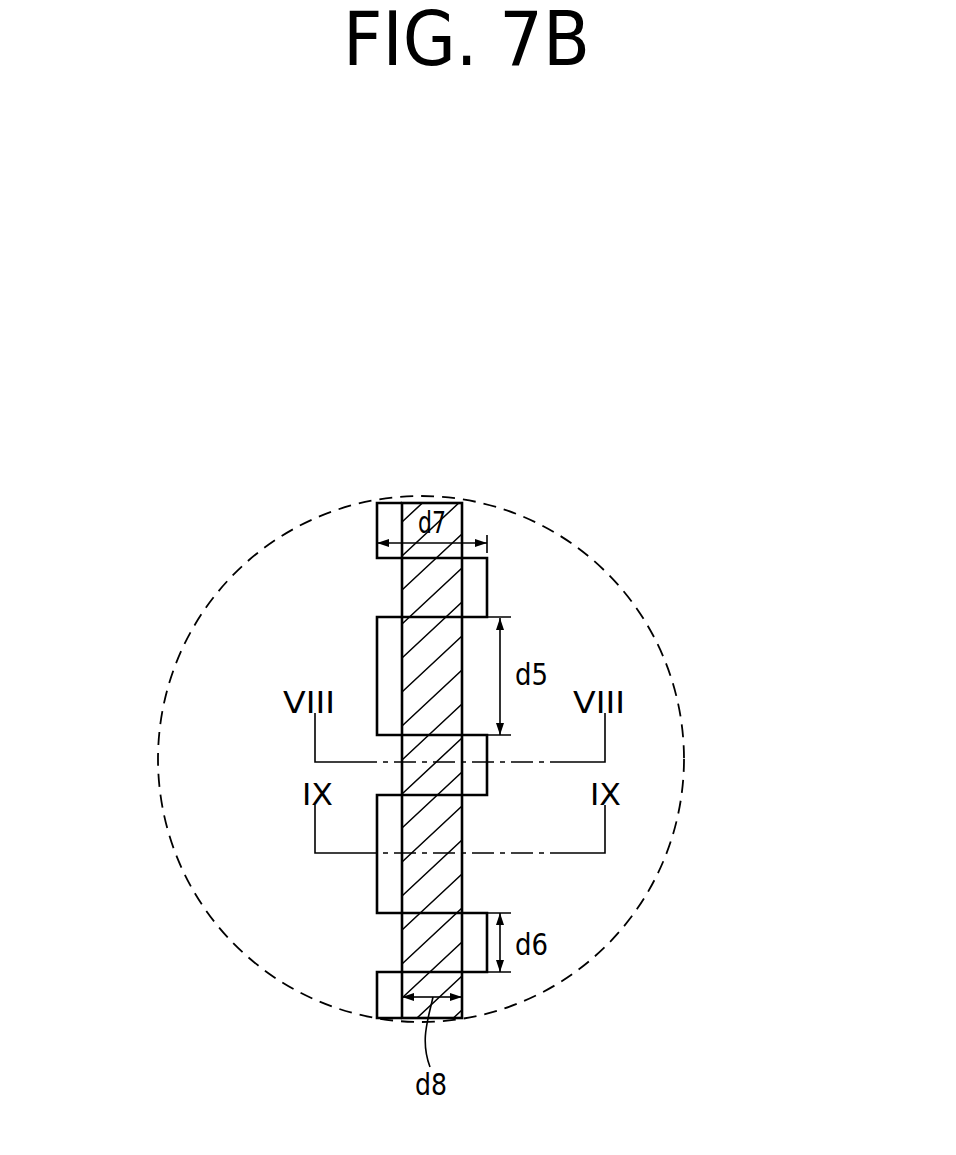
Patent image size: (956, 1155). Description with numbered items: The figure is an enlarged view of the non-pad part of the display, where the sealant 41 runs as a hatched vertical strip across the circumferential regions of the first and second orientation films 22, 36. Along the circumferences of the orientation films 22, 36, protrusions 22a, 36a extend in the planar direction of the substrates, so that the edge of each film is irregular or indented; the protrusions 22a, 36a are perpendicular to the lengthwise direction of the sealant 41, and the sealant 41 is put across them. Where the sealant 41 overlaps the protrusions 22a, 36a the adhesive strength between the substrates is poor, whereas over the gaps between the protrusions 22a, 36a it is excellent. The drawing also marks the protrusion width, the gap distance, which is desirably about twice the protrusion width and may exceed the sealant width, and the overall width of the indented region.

The first orientation film 22 is at (221, 760).
The second orientation film 36 is at (263, 575).
The sealant 41 is at (403, 605).
The protrusions of the first orientation film 22a is at (632, 765).
The protrusions of the second orientation film 36a is at (487, 585).